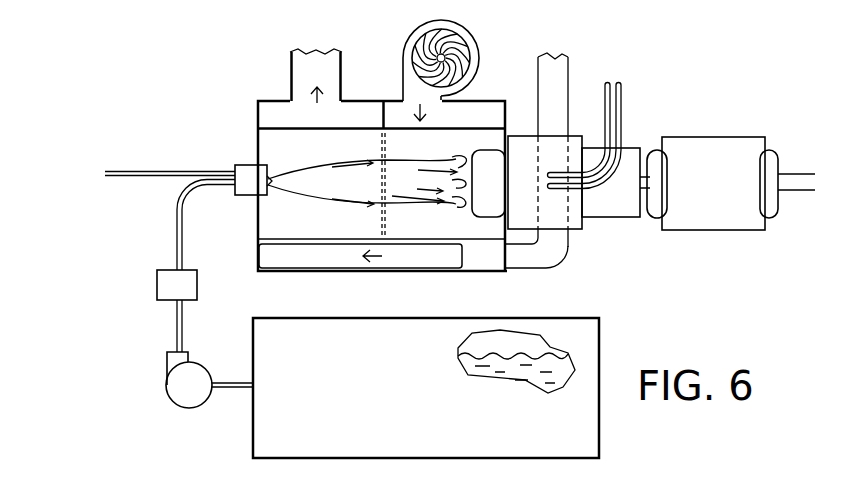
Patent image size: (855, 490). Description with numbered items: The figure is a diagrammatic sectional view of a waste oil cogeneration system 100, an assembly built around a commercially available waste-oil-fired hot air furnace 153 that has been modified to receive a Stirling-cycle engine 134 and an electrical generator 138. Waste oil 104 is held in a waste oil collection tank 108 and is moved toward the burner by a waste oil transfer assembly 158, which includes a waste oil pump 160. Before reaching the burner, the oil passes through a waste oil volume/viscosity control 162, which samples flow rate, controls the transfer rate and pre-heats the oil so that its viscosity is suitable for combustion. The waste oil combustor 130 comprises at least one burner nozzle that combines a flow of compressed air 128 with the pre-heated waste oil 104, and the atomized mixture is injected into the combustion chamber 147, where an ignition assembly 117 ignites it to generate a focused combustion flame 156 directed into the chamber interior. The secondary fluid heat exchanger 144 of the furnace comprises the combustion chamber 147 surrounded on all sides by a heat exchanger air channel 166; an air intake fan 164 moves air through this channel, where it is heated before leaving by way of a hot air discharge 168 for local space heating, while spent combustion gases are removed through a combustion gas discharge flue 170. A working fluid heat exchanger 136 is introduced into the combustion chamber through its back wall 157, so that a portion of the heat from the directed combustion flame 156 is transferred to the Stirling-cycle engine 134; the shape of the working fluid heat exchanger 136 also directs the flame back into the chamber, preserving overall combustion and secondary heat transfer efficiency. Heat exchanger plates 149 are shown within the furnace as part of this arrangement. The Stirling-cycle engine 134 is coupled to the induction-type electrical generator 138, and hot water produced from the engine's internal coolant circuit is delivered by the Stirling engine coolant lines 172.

The waste oil cogeneration system 100 is at (163, 46).
The waste oil 104 is at (552, 354).
The waste oil collection tank 108 is at (397, 407).
The ignition assembly 117 is at (266, 167).
The compressed air 128 is at (152, 170).
The waste oil combustor 130 is at (247, 196).
The Stirling-cycle engine 134 is at (592, 255).
The working fluid heat exchanger 136 is at (472, 214).
The electrical generator 138 is at (716, 137).
The secondary fluid heat exchanger 144 is at (269, 281).
The combustion chamber 147 is at (262, 134).
The heat exchange plates 149 is at (367, 133).
The waste-oil-fired hot air furnace 153 is at (250, 92).
The combustion flame 156 is at (325, 195).
The back wall 157 is at (503, 233).
The waste oil transfer assembly 158 is at (156, 243).
The waste oil pump 160 is at (167, 408).
The waste oil volume/viscosity control 162 is at (167, 300).
The air intake fan 164 is at (478, 46).
The heat exchanger air channel 166 is at (344, 110).
The hot air discharge 168 is at (313, 50).
The combustion gas discharge flue 170 is at (558, 58).
The Stirling engine coolant lines 172 is at (622, 100).